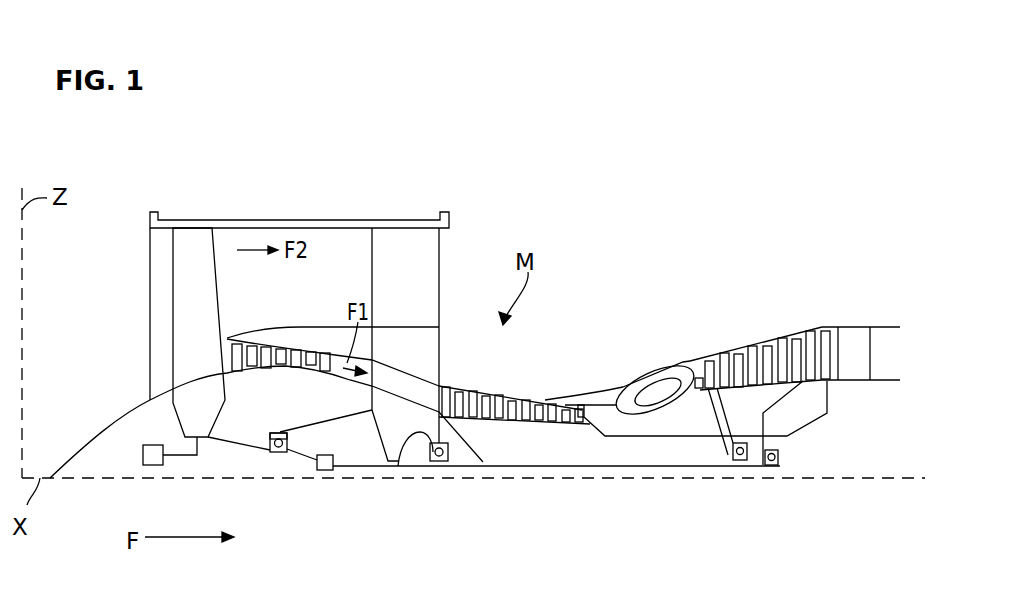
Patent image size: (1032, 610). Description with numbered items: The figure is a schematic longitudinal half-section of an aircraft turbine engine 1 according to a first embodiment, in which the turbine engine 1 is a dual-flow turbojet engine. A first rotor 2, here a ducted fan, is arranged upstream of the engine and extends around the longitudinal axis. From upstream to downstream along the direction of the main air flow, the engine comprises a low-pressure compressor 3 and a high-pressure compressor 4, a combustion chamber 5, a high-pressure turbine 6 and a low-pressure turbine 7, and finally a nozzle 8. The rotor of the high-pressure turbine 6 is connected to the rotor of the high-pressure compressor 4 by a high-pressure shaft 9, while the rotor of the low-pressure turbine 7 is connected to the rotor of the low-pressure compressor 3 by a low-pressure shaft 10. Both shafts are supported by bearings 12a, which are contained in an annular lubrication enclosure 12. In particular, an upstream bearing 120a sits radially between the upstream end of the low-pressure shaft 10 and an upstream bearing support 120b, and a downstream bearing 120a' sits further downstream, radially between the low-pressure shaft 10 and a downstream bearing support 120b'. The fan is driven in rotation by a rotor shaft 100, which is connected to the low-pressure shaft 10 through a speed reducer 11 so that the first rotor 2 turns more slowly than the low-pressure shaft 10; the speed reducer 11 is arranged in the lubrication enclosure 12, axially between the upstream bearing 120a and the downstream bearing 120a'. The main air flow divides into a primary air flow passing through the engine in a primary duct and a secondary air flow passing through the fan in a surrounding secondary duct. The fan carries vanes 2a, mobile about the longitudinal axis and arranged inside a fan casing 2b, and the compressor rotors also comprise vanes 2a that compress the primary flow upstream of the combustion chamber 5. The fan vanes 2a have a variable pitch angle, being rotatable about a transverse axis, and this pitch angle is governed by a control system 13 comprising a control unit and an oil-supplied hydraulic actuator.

The turbine engine 1 is at (580, 264).
The first rotor 2 is at (155, 313).
The vanes 2a is at (190, 354).
The fan casing 2b is at (174, 221).
The low-pressure compressor 3 is at (255, 345).
The high-pressure compressor 4 is at (474, 390).
The combustion chamber 5 is at (655, 382).
The high-pressure turbine 6 is at (698, 378).
The low-pressure turbine 7 is at (827, 340).
The nozzle 8 is at (888, 355).
The high-pressure shaft 9 is at (652, 437).
The low-pressure shaft 10 is at (540, 468).
The speed reducer 11 is at (325, 472).
The lubrication enclosure 12 is at (367, 435).
The bearings 12a is at (280, 453).
The control system 13 is at (143, 456).
The rotor shaft 100 is at (215, 438).
The upstream bearing 120a is at (263, 495).
The upstream bearing support 120b is at (308, 401).
The downstream bearing 120a' is at (426, 506).
The downstream bearing support 120b' is at (399, 480).